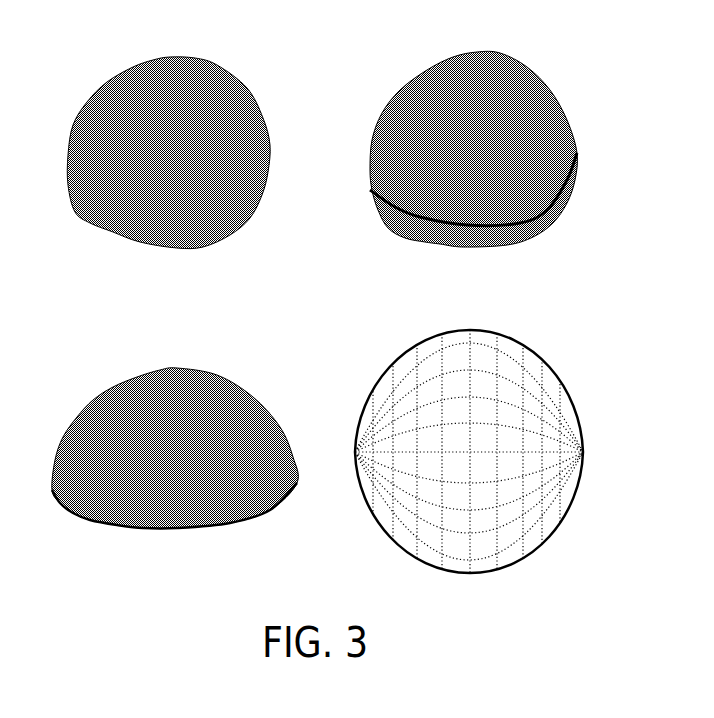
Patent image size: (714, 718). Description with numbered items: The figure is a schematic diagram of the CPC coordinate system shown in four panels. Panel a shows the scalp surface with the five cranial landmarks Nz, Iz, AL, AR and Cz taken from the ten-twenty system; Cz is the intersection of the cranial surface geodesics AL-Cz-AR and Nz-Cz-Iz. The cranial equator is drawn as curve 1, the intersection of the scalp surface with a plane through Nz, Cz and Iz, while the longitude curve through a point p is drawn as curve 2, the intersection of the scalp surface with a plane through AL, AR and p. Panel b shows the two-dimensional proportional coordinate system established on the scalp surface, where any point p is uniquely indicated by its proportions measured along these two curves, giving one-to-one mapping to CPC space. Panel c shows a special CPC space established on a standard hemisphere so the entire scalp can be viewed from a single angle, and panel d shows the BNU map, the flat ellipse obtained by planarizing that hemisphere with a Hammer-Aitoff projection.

The curve 1 is at (141, 94).
The curve 2 is at (182, 165).
The panel a is at (160, 144).
The panel b is at (459, 142).
The panel c is at (167, 422).
The panel d is at (468, 440).